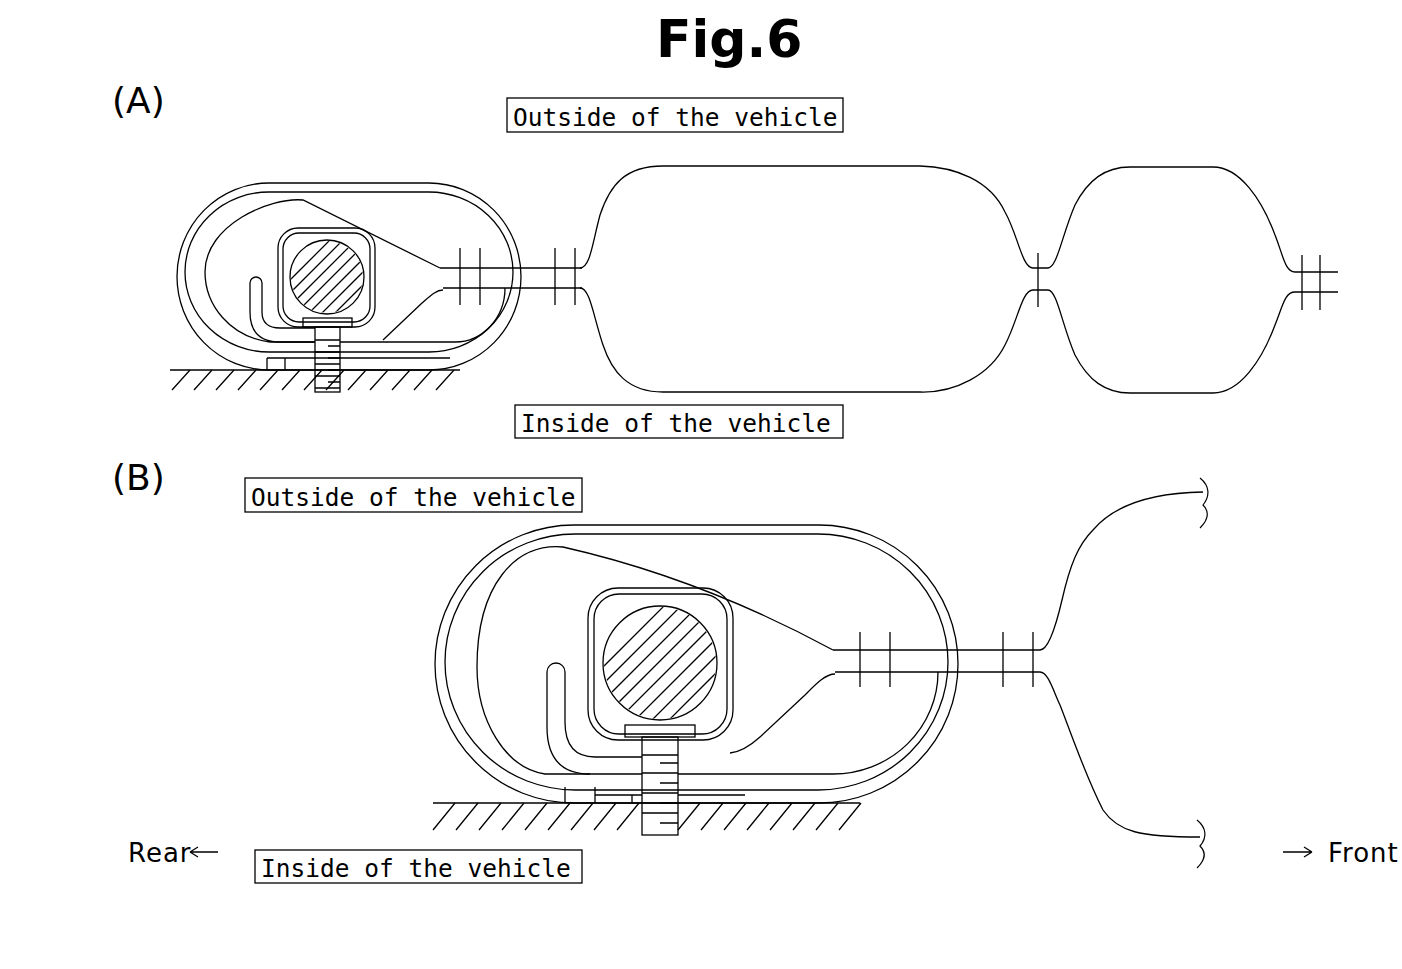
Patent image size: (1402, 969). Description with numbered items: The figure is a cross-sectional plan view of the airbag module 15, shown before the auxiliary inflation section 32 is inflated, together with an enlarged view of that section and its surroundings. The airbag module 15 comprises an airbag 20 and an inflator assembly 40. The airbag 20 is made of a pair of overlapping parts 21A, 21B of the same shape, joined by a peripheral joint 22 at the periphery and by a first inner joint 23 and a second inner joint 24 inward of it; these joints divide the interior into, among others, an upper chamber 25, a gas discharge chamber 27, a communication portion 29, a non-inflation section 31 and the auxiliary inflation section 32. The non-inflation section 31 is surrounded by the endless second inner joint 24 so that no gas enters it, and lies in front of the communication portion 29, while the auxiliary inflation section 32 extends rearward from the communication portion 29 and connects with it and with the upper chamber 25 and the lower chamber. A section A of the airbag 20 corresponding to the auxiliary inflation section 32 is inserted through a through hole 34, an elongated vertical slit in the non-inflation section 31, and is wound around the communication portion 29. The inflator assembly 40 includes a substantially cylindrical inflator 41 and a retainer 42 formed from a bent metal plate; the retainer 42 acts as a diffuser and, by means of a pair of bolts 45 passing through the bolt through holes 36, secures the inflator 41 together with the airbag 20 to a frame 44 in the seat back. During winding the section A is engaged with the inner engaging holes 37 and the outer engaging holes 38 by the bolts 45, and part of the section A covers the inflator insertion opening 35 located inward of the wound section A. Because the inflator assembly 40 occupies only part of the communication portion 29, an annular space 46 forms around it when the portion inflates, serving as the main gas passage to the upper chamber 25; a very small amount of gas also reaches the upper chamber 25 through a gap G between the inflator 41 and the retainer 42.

In FIG. 6A, the airbag module 15 is at (1008, 150).
The airbag module 15 is at (964, 548).
In FIG. 6A, the airbag 20 is at (620, 185).
The airbag 20 is at (1090, 530).
In FIG. 6A, the overlapping part 21A is at (872, 168).
The overlapping part 21A is at (1180, 490).
In FIG. 6A, the overlapping part 21B is at (850, 396).
The overlapping part 21B is at (1160, 843).
In FIG. 6A, the peripheral joint 22 is at (1310, 258).
In FIG. 6A, the first inner joint 23 is at (1036, 255).
In FIG. 6A, the second inner joint 24 is at (464, 252).
The second inner joint 24 is at (890, 640).
In FIG. 6A, the upper chamber 25 is at (806, 283).
The upper chamber 25 is at (1141, 660).
In FIG. 6A, the gas discharge chamber 27 is at (1171, 280).
In FIG. 6A, the communication portion 29 is at (255, 222).
The communication portion 29 is at (540, 600).
In FIG. 6A, the annular space 46 is at (254, 250).
The annular space 46 is at (539, 630).
In FIG. 6A, the non-inflation section 31 is at (534, 300).
The non-inflation section 31 is at (968, 668).
In FIG. 6A, the auxiliary inflation section 32 is at (456, 183).
The auxiliary inflation section 32 is at (780, 525).
In FIG. 6A, the through hole 34 is at (490, 308).
The through hole 34 is at (900, 690).
In FIG. 6A, the inflator insertion opening 35 is at (250, 317).
The inflator insertion opening 35 is at (547, 745).
The bolt through holes 36 is at (710, 755).
The inner engaging holes 37 is at (690, 775).
In FIG. 6A, the outer engaging holes 38 is at (276, 364).
The outer engaging holes 38 is at (633, 803).
In FIG. 6A, the inflator assembly 40 is at (413, 188).
The inflator assembly 40 is at (690, 547).
In FIG. 6A, the inflator 41 is at (333, 252).
The inflator 41 is at (680, 620).
In FIG. 6A, the retainer 42 is at (374, 240).
The retainer 42 is at (720, 618).
In FIG. 6A, the frame 44 is at (455, 382).
The frame 44 is at (850, 815).
In FIG. 6A, the bolts 45 is at (330, 395).
The bolts 45 is at (680, 822).
In FIG. 6A, the section A is at (505, 190).
The section A is at (690, 525).
The gap G is at (730, 690).